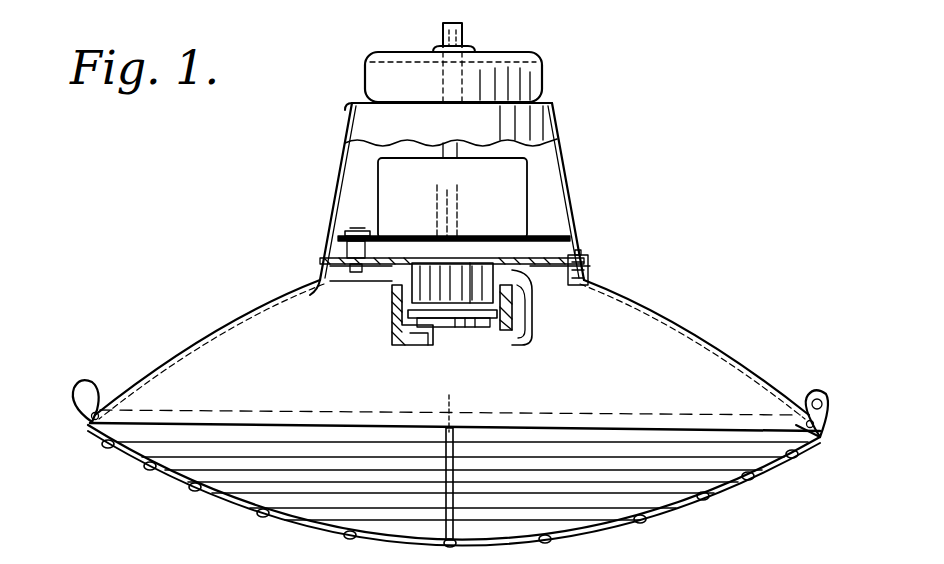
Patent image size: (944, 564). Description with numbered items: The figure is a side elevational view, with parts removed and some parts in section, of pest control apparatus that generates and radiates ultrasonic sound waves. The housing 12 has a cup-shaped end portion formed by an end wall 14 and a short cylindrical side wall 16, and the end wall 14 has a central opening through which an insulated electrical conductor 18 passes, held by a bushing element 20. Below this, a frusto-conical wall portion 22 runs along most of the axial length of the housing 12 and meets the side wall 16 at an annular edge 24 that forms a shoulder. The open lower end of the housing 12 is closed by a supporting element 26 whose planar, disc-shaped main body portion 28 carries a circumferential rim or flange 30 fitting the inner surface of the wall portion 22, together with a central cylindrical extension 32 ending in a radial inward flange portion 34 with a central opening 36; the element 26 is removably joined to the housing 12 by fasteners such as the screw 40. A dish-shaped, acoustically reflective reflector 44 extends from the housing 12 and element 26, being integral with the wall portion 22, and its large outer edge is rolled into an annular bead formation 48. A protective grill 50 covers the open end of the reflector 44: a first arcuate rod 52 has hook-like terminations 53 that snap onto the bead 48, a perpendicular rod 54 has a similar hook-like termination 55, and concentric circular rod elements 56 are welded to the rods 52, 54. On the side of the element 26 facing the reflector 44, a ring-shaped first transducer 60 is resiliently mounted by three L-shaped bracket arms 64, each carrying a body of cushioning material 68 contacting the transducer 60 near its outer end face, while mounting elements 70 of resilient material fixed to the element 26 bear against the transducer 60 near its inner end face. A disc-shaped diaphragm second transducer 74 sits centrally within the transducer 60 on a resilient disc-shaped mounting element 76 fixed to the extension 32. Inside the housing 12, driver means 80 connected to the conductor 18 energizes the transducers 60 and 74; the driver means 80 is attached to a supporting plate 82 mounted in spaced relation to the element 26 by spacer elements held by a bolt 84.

The housing 12 is at (582, 127).
The end wall 14 is at (380, 52).
The cylindrical side wall 16 is at (542, 76).
The insulated electrical conductor 18 is at (443, 40).
The bushing element 20 is at (466, 46).
The frusto-conical wall portion 22 is at (343, 158).
The annular edge 24 is at (352, 103).
The supporting element 26 is at (352, 278).
The main body portion 28 is at (340, 290).
The annular rim or flange 30 is at (318, 295).
The central cylindrical extension 32 is at (465, 275).
The radial inward flange portion 34 is at (462, 237).
The central opening 36 is at (445, 270).
The screw 40 is at (590, 270).
The reflector 44 is at (725, 340).
The annular bead formation 48 is at (822, 440).
The protective grill 50 is at (195, 508).
The first rod 52 is at (595, 530).
The hook-like terminations 53 is at (78, 385).
The rod element 54 is at (455, 440).
The hook-like termination 55 is at (440, 401).
The concentric circular rod elements 56 is at (108, 450).
The ring transducer 60 is at (390, 290).
The bracket arms 64 is at (520, 310).
The body of cushioning material 68 is at (525, 335).
The mounting elements 70 is at (510, 260).
The second transducer 74 is at (478, 327).
The disc-shaped mounting element 76 is at (455, 327).
The driver means 80 is at (527, 168).
The supporting plate 82 is at (340, 250).
The bolt 84 is at (355, 228).